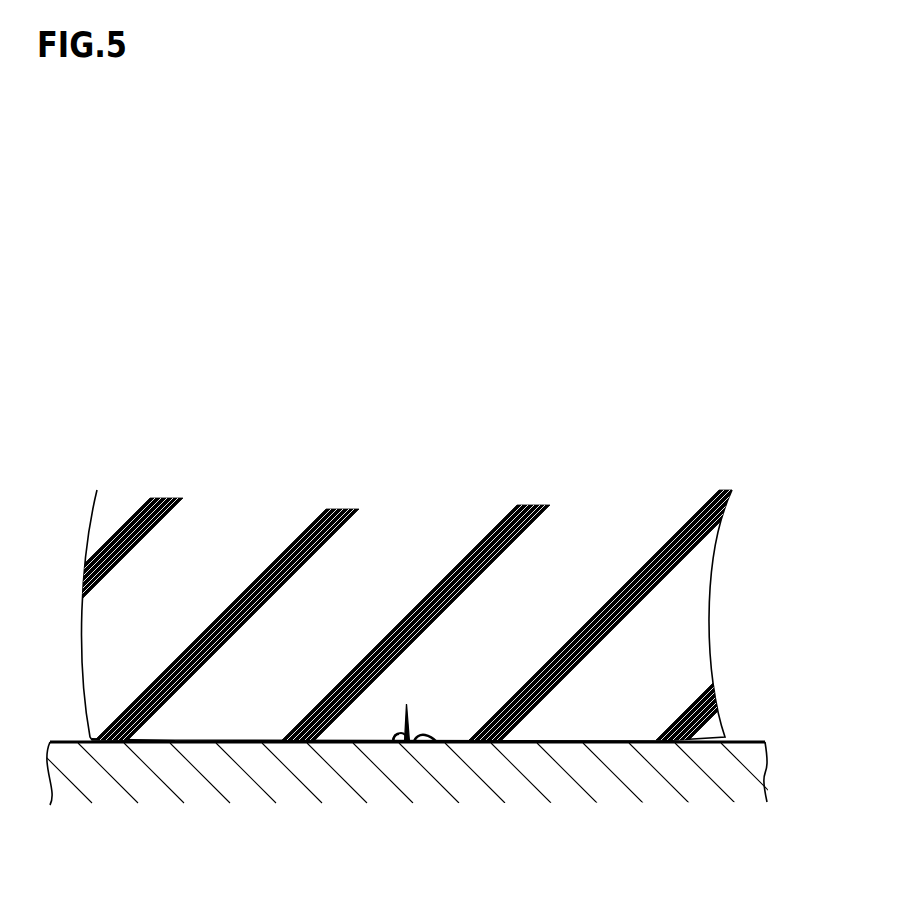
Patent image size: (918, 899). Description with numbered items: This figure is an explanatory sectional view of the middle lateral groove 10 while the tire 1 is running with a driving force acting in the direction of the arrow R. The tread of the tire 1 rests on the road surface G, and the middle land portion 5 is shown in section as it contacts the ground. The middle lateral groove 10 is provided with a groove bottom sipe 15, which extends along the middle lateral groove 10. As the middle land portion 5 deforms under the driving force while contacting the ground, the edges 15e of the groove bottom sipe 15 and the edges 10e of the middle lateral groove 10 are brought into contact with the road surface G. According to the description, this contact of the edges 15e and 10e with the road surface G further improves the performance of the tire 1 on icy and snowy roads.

The tire 1 is at (414, 663).
The middle land portion 5 is at (250, 707).
The middle lateral groove 10 is at (421, 798).
The groove bottom sipe 15 is at (408, 745).
The edges of the groove bottom sipe 15e is at (415, 745).
The edges of the middle lateral groove 10e is at (443, 745).
The road surface G is at (740, 742).
The direction of driving force R is at (517, 492).